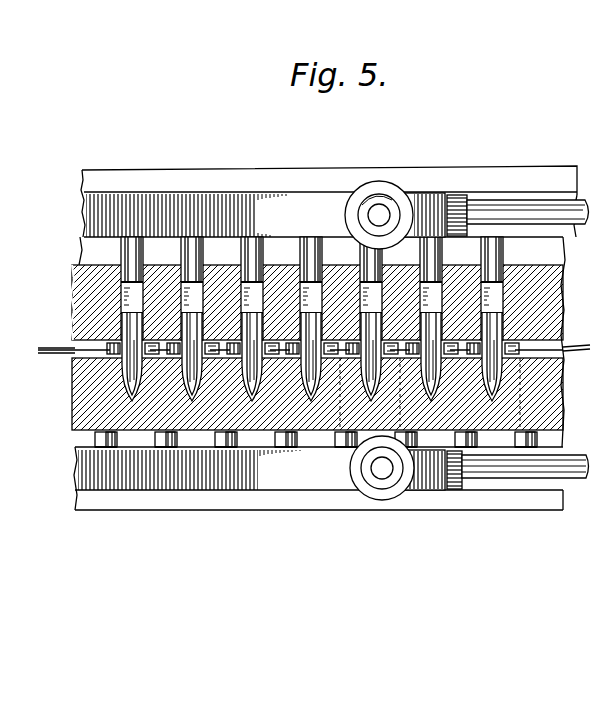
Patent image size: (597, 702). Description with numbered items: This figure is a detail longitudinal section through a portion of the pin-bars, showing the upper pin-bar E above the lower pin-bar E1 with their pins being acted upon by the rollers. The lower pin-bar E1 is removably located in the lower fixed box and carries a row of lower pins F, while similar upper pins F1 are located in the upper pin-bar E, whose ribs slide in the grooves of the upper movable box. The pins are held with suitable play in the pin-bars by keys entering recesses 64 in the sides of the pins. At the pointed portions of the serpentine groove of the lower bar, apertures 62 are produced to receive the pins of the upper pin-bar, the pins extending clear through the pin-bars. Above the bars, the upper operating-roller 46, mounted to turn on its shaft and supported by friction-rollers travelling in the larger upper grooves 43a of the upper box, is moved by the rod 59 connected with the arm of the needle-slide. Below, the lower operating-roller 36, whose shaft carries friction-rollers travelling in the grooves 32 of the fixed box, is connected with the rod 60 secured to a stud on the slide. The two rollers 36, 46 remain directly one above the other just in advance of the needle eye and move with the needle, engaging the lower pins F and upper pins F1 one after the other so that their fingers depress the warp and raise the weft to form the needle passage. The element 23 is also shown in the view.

The upper grooves 43a is at (329, 201).
The upper pins F1 is at (262, 243).
The upper operating-roller 46 is at (385, 184).
The rod 59 is at (535, 204).
The upper pin-bar E is at (72, 291).
The recesses 64 is at (183, 303).
The rod 23 is at (52, 340).
The lower pin-bar E1 is at (72, 399).
The apertures 62 is at (140, 400).
The lower pins F is at (281, 447).
The lower operating-roller 36 is at (351, 466).
The grooves 32 is at (228, 490).
The rod 60 is at (530, 476).